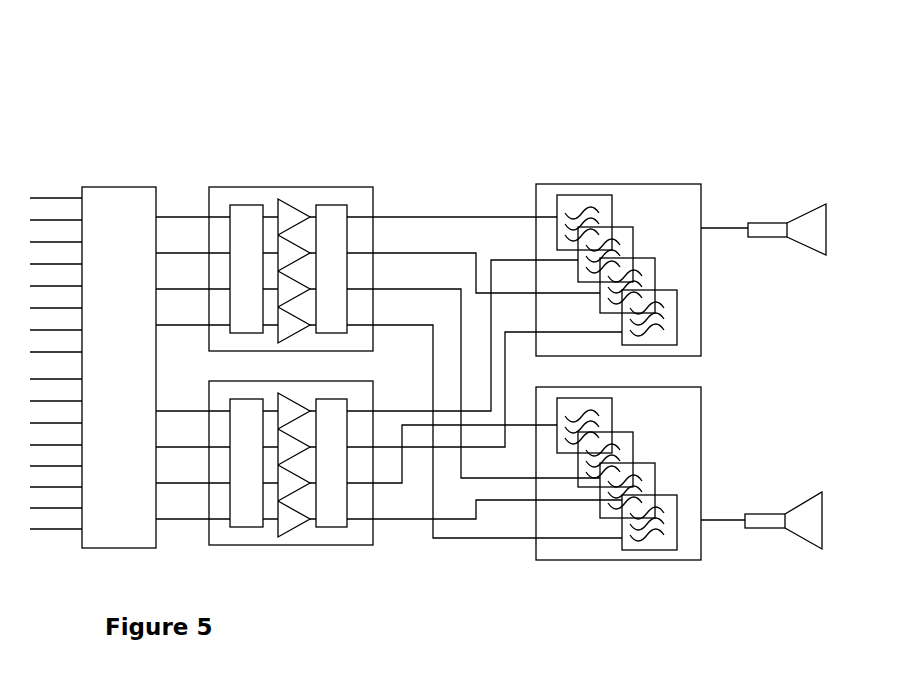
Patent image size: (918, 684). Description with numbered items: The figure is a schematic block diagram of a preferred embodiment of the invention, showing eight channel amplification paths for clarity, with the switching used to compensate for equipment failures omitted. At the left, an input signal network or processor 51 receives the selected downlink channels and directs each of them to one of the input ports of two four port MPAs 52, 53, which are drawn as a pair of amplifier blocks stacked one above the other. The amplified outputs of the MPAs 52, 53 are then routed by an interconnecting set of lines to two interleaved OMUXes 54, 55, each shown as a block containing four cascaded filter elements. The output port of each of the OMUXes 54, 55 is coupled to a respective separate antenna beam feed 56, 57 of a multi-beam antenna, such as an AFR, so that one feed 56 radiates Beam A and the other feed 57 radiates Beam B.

The input signal network or processor 51 is at (93, 186).
The four port MPA 52 is at (254, 186).
The four port MPA 53 is at (298, 381).
The interleaved OMUX 54 is at (579, 387).
The interleaved OMUX 55 is at (645, 184).
The antenna beam feed 56 is at (789, 217).
The antenna beam feed 57 is at (806, 497).